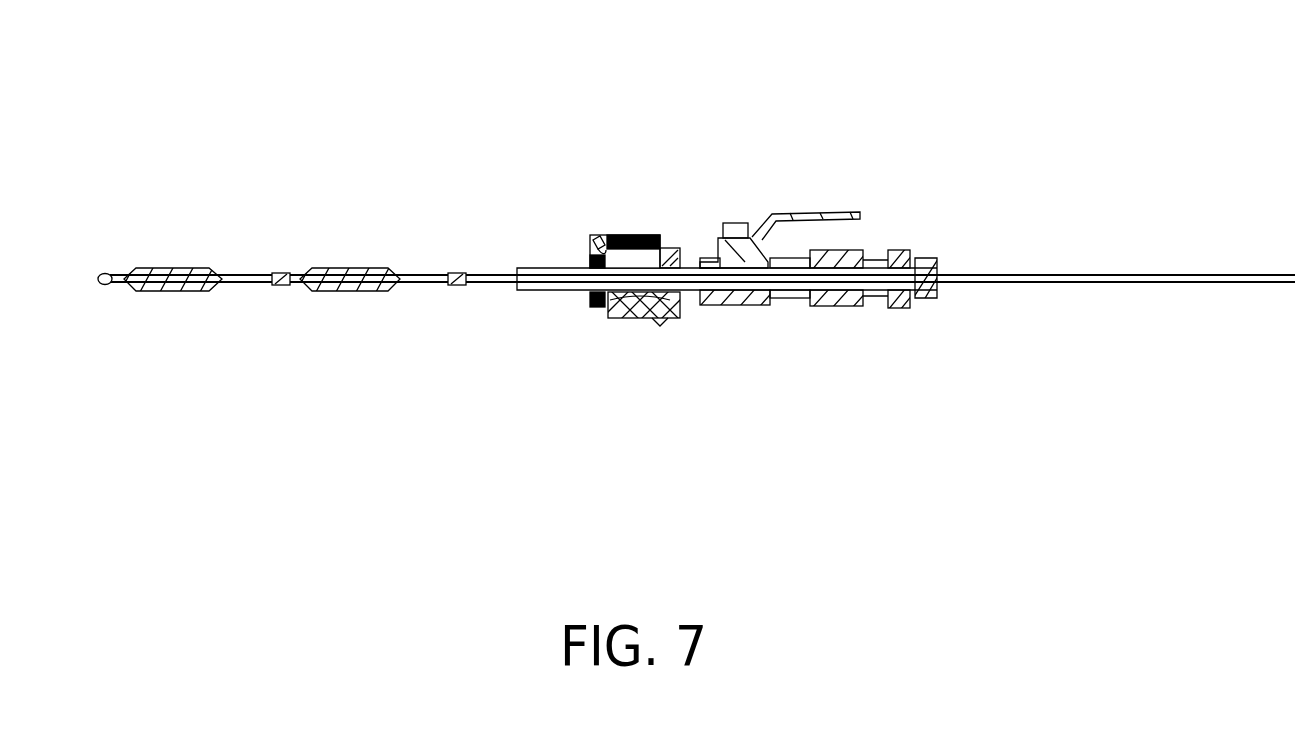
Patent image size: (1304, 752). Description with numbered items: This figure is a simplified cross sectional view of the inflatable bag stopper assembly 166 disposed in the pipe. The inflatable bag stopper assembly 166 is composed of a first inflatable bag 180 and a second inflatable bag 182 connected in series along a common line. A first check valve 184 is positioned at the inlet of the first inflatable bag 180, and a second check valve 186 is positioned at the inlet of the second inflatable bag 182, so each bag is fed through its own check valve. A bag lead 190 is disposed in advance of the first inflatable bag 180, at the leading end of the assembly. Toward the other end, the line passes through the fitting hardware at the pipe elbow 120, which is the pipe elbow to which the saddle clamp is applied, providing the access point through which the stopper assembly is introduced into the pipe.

The inflatable bag stopper assembly 166 is at (302, 108).
The bag lead 190 is at (106, 270).
The first inflatable bag 180 is at (165, 268).
The second inflatable bag 182 is at (335, 268).
The first check valve 184 is at (282, 288).
The second check valve 186 is at (458, 290).
The pipe elbow 120 is at (668, 236).